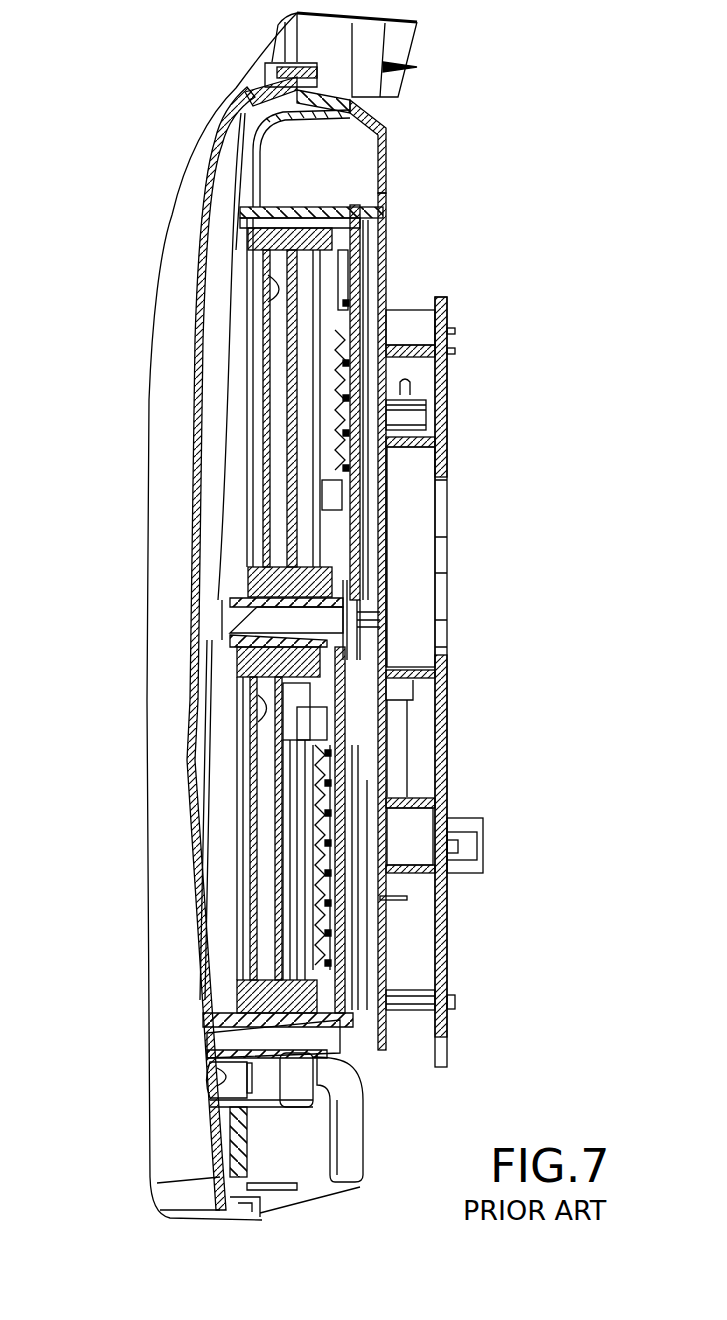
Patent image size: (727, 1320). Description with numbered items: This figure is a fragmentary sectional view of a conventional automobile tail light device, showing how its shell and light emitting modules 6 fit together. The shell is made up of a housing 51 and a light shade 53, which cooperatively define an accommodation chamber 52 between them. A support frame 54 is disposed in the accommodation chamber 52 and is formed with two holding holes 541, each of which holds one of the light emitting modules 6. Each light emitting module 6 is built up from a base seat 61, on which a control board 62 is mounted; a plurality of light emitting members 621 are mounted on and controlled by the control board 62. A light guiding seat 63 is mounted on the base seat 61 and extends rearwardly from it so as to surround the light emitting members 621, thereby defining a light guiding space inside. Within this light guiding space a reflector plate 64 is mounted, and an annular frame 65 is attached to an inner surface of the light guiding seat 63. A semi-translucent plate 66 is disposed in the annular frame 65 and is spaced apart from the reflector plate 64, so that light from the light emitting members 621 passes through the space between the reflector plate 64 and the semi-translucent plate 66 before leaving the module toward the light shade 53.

The light emitting module 6 is at (233, 493).
The housing 51 is at (447, 675).
The accommodation chamber 52 is at (365, 535).
The light shade 53 is at (168, 658).
The support frame 54 is at (230, 638).
The holding hole 541 is at (233, 417).
The base seat 61 is at (338, 1024).
The control board 62 is at (340, 860).
The light emitting member 621 is at (317, 748).
The light guiding seat 63 is at (260, 1030).
The reflector plate 64 is at (303, 943).
The annular frame 65 is at (300, 982).
The semi-translucent plate 66 is at (258, 896).